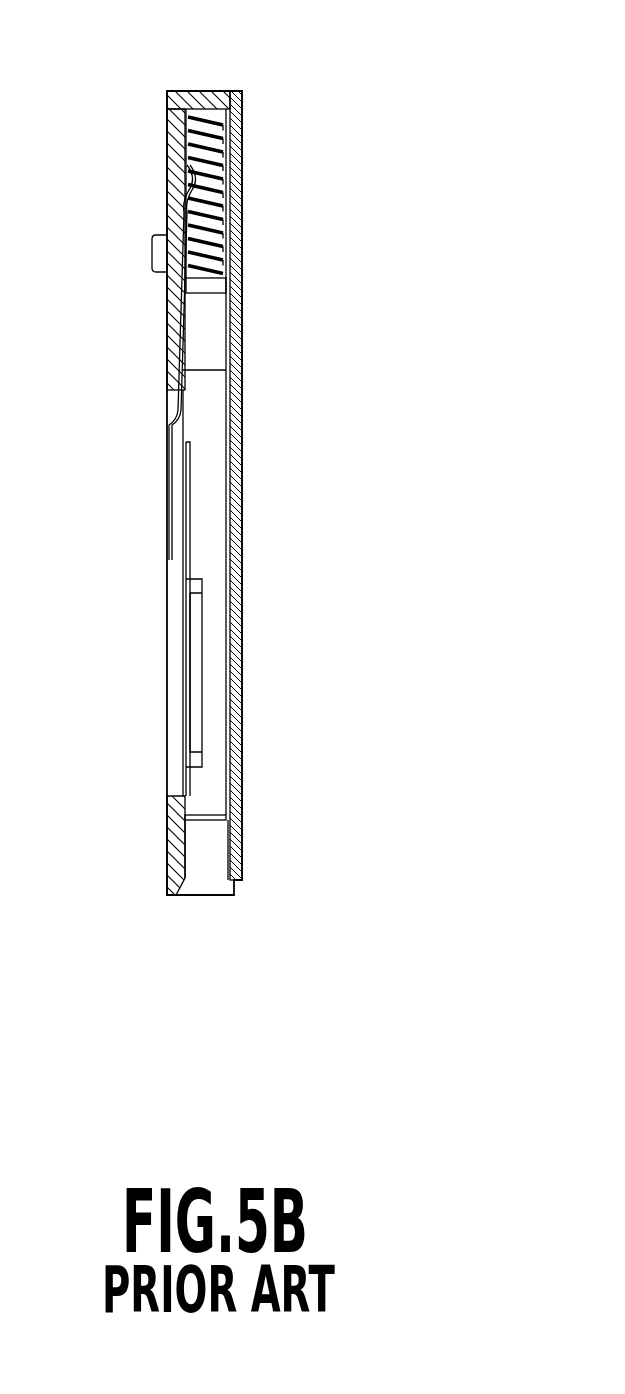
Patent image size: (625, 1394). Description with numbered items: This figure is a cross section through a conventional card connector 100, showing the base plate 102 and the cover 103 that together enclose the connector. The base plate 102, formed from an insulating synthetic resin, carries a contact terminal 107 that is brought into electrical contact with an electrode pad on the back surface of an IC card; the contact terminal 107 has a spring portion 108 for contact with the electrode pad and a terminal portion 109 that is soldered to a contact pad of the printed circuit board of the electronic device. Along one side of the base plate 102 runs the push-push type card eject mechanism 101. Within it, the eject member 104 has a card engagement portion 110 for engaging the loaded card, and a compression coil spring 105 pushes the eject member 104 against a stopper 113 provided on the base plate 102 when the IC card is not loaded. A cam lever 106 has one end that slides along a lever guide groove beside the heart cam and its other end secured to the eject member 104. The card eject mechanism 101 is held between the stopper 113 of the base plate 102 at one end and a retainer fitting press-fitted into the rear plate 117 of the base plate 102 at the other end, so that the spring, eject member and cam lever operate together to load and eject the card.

The card connector 100 is at (268, 518).
The card eject mechanism 101 is at (206, 660).
The base plate 102 is at (177, 833).
The cover 103 is at (240, 775).
The eject member 104 is at (220, 425).
The compression coil spring 105 is at (189, 127).
The cam lever 106 is at (195, 682).
The contact terminal 107 is at (180, 378).
The spring portion 108 is at (228, 201).
The terminal portion 109 is at (172, 437).
The card engagement portion 110 is at (218, 287).
The stopper 113 is at (205, 890).
The rear plate 117 is at (205, 100).